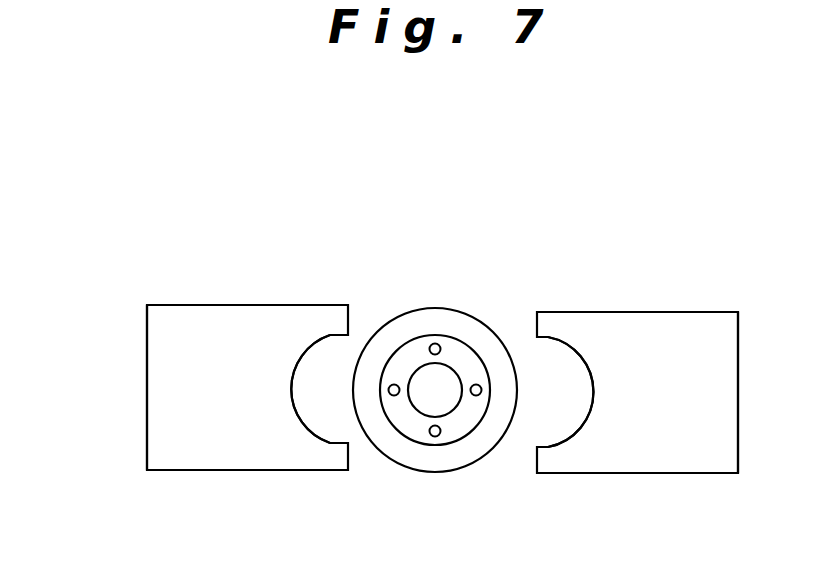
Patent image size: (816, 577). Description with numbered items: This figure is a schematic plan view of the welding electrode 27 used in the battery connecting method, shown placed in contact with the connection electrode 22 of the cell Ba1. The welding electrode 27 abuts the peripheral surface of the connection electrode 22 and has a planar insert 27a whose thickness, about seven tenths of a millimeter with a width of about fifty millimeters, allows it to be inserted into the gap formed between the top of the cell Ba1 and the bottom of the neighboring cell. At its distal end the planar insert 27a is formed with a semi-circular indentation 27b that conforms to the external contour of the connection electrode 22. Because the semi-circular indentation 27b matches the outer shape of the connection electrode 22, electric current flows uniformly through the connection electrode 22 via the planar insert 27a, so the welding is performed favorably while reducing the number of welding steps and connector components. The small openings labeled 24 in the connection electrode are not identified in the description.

The welding electrode 27 is at (140, 272).
The planar insert 27a is at (180, 407).
The semi-circular indentation 27b is at (302, 408).
The cell Ba1 is at (396, 298).
The connection electrode 22 is at (457, 362).
The bolt holes 24 is at (435, 344).